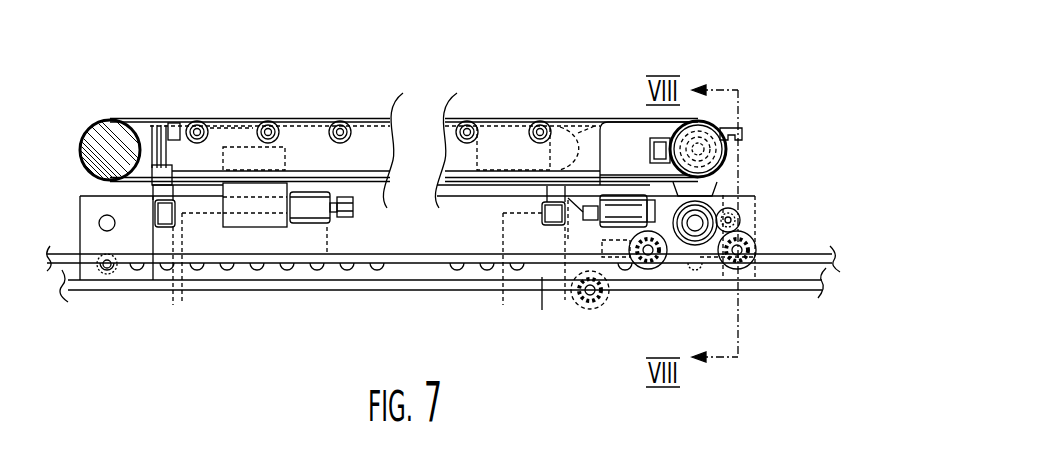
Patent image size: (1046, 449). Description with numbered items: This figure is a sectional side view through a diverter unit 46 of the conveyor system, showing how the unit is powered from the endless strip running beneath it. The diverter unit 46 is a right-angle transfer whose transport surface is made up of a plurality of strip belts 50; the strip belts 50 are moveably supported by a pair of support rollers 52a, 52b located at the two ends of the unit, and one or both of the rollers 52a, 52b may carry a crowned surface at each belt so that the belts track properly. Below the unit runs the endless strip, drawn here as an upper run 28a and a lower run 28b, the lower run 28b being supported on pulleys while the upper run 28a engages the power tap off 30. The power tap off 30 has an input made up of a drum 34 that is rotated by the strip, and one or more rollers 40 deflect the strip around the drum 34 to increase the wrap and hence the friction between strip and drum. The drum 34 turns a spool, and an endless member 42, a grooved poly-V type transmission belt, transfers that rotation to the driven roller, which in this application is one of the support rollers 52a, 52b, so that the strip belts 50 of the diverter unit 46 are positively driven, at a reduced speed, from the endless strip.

The upper run 28a is at (798, 253).
The lower run 28b is at (772, 290).
The power tap off 30 is at (750, 228).
The drum 34 is at (708, 203).
The rollers 40 is at (650, 268).
The endless member 42 is at (718, 177).
The diverter unit 46 is at (543, 57).
The strip belts 50 is at (314, 117).
The support roller 52a is at (719, 125).
The support roller 52b is at (120, 117).